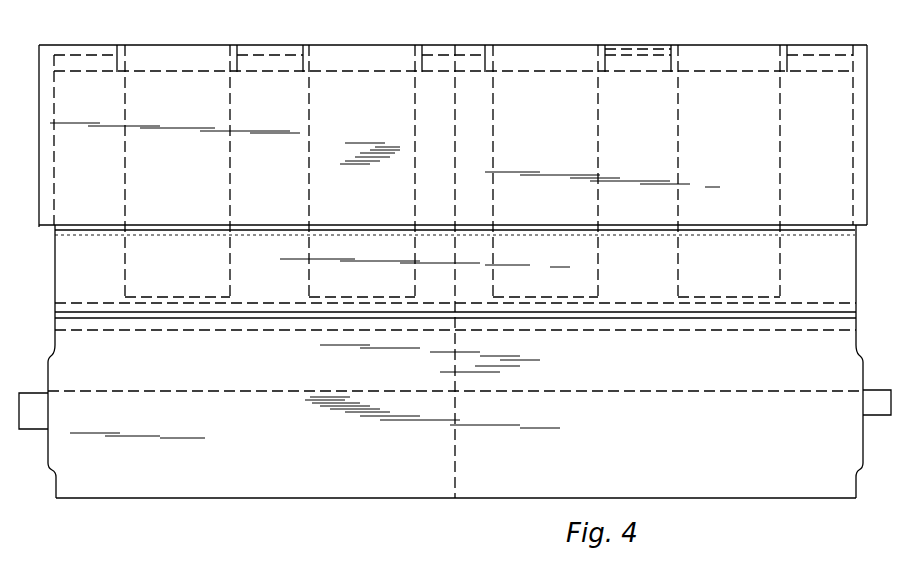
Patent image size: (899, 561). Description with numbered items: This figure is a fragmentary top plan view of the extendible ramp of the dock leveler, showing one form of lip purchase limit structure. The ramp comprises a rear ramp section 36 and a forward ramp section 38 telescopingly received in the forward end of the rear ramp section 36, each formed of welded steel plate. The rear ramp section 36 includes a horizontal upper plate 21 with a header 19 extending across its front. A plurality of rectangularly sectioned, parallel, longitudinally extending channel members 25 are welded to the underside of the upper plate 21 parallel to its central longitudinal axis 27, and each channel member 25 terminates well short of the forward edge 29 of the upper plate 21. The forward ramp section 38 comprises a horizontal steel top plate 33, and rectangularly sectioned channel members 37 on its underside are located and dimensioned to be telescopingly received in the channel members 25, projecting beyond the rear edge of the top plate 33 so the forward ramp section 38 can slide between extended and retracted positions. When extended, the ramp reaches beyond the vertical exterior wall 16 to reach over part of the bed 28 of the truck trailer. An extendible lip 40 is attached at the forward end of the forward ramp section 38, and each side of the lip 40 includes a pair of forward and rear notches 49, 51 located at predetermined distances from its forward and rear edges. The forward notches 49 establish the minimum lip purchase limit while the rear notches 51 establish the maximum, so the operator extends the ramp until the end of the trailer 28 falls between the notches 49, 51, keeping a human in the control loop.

The vertical exterior wall 16 is at (273, 558).
The header 19 is at (92, 72).
The upper plate 21 is at (842, 118).
The channel members 25 is at (656, 49).
The central longitudinal axis 27 is at (455, 502).
The truck trailer bed 28 is at (33, 392).
The forward edge 29 is at (862, 228).
The top plate 33 is at (845, 282).
The rear ramp section 36 is at (868, 45).
The channel members 37 is at (676, 120).
The forward ramp section 38 is at (862, 322).
The extendible lip 40 is at (822, 497).
The forward notches 49 is at (53, 468).
The rear notches 51 is at (52, 352).